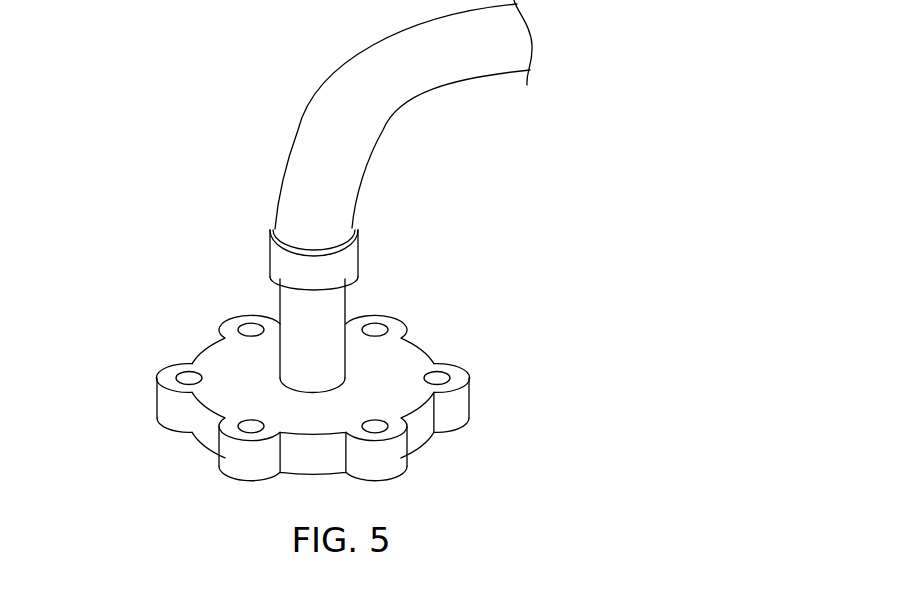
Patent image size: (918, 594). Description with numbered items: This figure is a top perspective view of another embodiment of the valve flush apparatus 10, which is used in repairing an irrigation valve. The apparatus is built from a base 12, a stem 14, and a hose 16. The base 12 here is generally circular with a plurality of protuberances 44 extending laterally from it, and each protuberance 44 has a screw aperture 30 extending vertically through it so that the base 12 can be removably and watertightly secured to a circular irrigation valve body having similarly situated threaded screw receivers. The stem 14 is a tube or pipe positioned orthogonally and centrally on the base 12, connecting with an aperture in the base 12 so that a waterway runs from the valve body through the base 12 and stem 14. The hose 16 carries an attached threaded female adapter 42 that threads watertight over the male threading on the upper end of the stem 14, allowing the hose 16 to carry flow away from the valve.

The valve flush apparatus 10 is at (195, 62).
The base 12 is at (210, 356).
The stem 14 is at (323, 340).
The hose 16 is at (372, 83).
The screw aperture 30 is at (443, 377).
The threaded female adapter 42 is at (283, 268).
The protuberance 44 is at (165, 418).